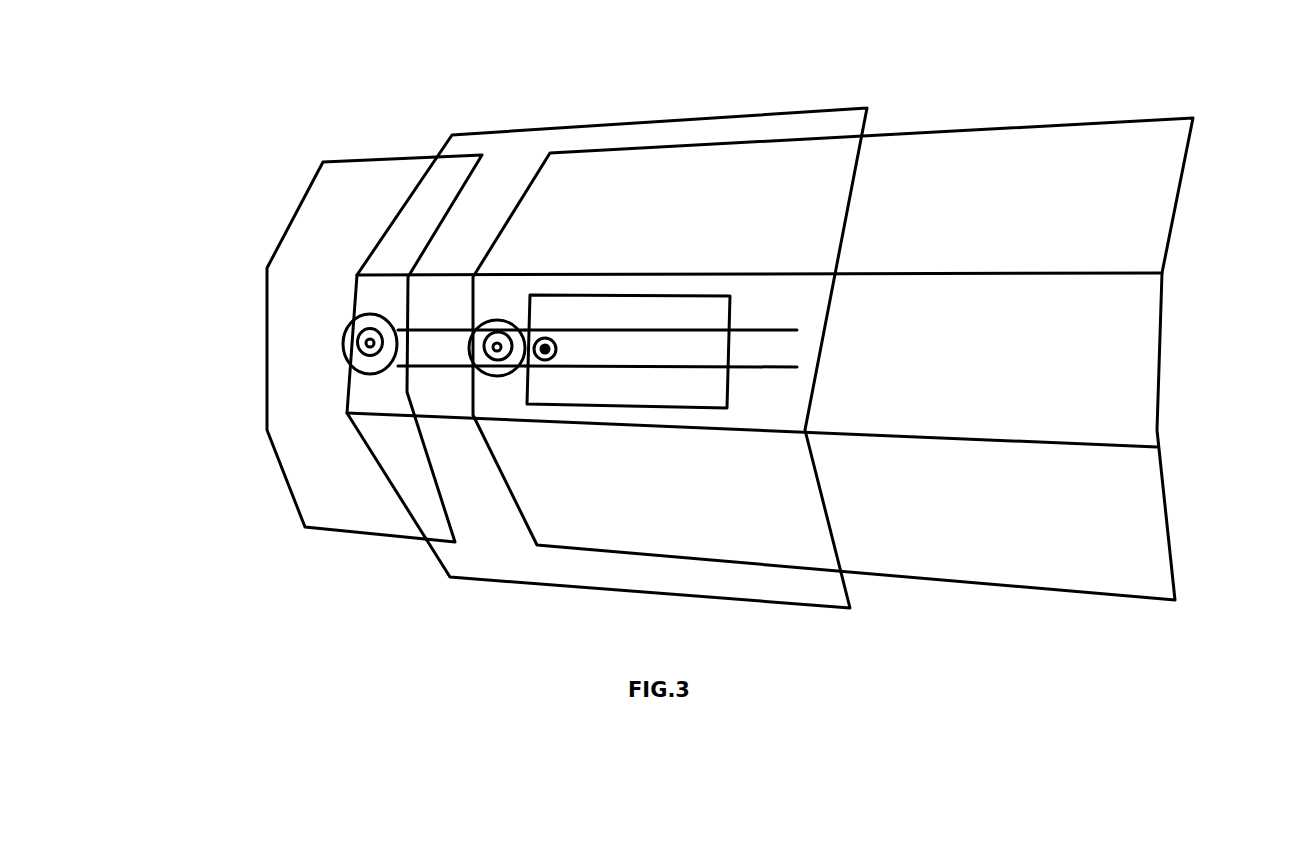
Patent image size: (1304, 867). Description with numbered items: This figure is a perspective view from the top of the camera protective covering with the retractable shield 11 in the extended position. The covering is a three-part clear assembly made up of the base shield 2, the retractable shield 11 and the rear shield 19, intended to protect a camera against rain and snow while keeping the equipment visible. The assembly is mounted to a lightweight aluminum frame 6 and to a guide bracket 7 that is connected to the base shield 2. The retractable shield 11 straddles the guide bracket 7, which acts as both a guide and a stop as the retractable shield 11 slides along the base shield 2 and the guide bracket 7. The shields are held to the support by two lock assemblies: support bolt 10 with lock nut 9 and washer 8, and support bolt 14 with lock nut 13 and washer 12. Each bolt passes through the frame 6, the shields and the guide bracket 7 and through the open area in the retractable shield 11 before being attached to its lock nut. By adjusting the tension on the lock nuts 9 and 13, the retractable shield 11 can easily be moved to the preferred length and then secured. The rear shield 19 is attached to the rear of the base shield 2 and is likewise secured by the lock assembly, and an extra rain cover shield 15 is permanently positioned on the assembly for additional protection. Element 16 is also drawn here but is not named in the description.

The base shield 2 is at (480, 546).
The frame 6 is at (630, 347).
The guide bracket 7 is at (437, 347).
The washer 8 is at (350, 345).
The lock nut 9 is at (373, 368).
The support bolt 10 is at (370, 340).
The retractable shield 11 is at (1117, 500).
The washer 12 is at (487, 375).
The lock nut 13 is at (493, 337).
The support bolt 14 is at (507, 325).
The extra rain cover shield 15 is at (587, 310).
The indicator 16 is at (546, 346).
The rear shield 19 is at (297, 305).